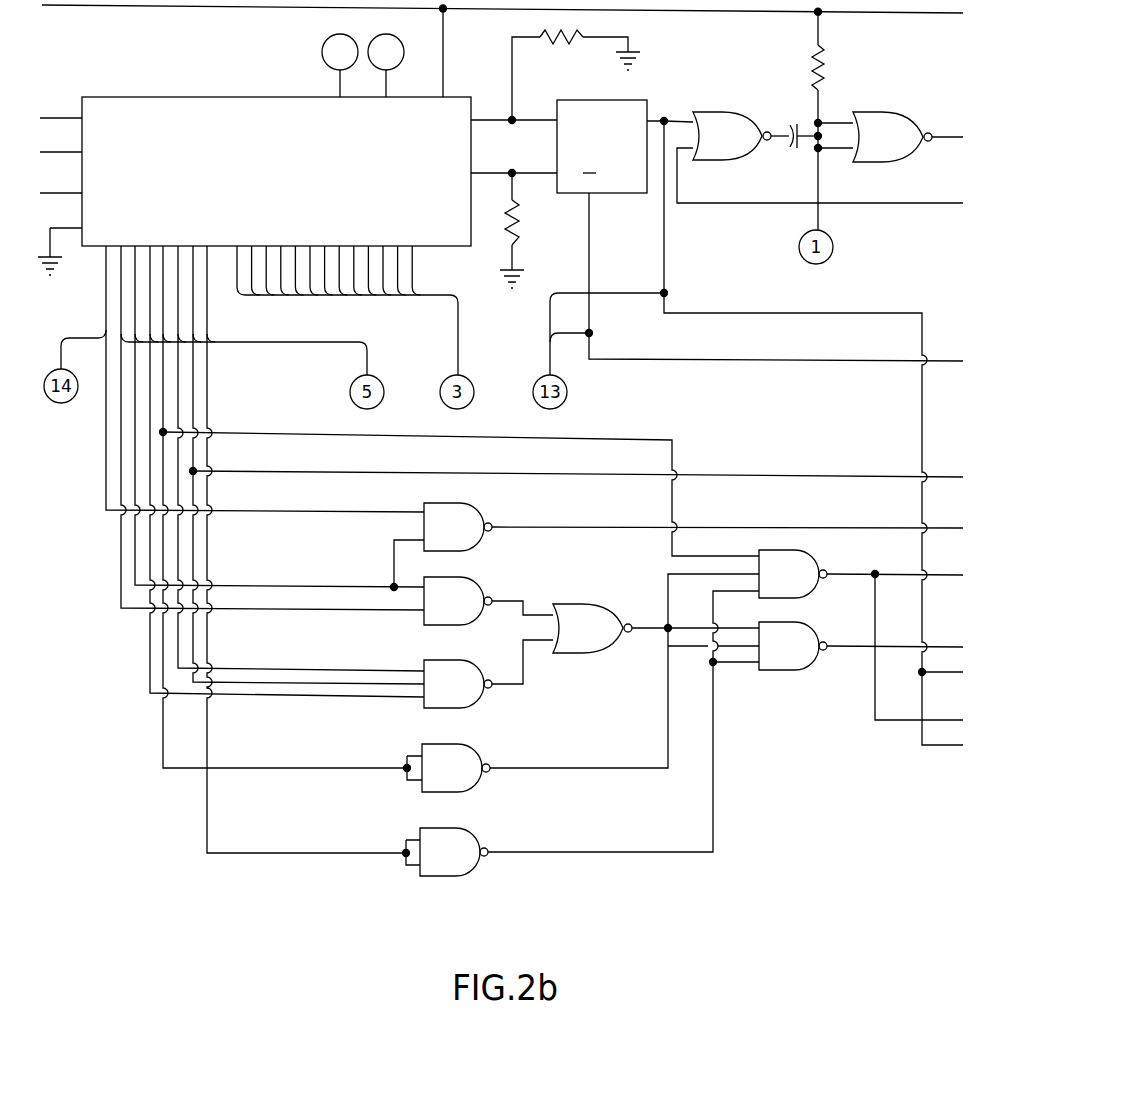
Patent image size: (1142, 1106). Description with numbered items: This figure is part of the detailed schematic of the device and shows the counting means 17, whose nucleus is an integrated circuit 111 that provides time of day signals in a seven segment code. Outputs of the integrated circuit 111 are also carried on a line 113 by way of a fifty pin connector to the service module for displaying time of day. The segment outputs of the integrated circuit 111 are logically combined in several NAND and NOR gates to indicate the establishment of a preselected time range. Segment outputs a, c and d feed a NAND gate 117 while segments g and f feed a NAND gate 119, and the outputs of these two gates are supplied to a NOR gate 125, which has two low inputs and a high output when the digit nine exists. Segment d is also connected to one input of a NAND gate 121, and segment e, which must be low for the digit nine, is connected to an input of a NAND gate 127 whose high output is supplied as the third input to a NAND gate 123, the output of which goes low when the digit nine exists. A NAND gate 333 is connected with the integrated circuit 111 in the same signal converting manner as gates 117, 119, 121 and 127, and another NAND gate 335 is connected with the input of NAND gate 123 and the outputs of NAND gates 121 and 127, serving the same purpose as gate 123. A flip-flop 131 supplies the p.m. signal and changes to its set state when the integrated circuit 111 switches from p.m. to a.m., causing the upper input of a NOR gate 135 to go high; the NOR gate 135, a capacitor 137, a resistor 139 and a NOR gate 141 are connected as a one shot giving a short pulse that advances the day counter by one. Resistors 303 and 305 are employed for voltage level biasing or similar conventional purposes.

The counting means 17 is at (254, 142).
The integrated circuit 111 is at (279, 185).
The line 113 is at (457, 361).
The flip-flop 131 is at (635, 100).
The NOR gate 135 is at (737, 112).
The capacitor 137 is at (791, 150).
The resistor 139 is at (824, 70).
The NOR gate 141 is at (889, 112).
The resistor 303 is at (516, 226).
The resistor 305 is at (566, 44).
The NAND gate 333 is at (461, 503).
The NAND gate 119 is at (466, 577).
The NOR gate 125 is at (597, 604).
The NAND gate 117 is at (466, 706).
The NAND gate 123 is at (807, 554).
The NAND gate 335 is at (799, 623).
The NAND gate 121 is at (469, 790).
The NAND gate 127 is at (468, 877).